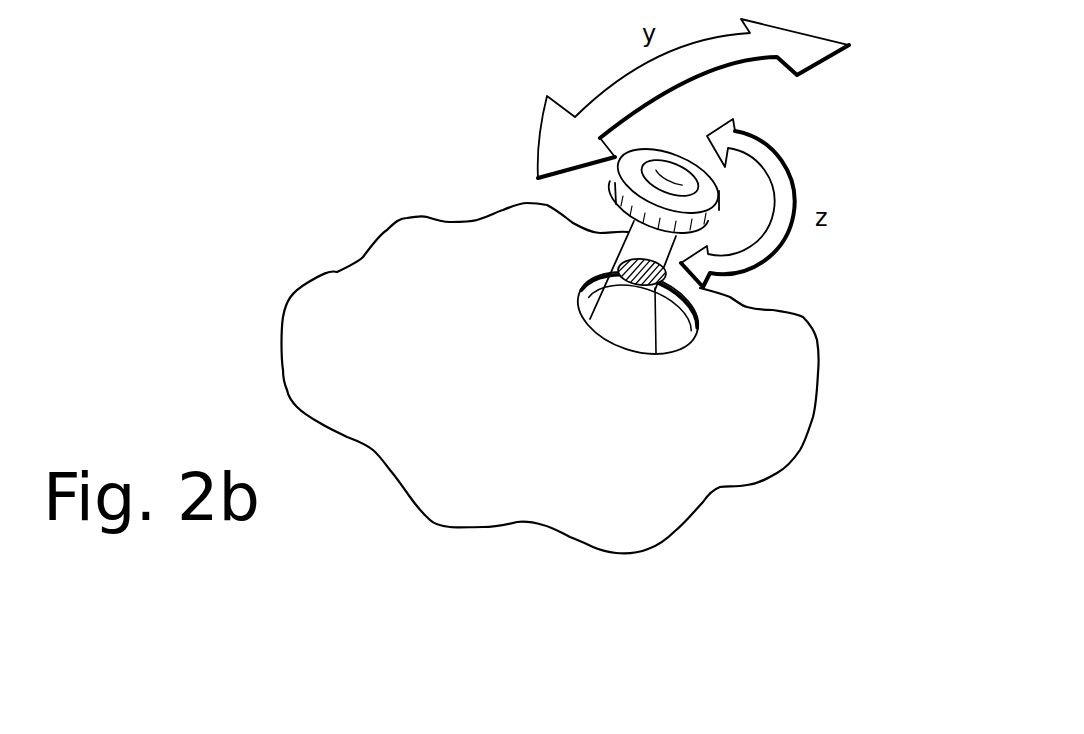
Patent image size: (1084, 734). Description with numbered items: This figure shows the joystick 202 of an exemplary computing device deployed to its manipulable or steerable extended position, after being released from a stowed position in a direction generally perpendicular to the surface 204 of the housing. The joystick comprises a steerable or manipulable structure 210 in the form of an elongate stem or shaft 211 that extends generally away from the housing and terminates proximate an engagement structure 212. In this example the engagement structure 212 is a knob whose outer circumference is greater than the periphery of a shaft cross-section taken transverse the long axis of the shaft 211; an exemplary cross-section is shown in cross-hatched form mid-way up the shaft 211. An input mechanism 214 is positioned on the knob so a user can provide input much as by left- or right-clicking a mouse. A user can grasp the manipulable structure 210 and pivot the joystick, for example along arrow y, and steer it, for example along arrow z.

The joystick 202 is at (596, 219).
The surface 204 is at (367, 354).
The manipulable structure 210 is at (583, 287).
The shaft 211 is at (651, 321).
The engagement structure 212 is at (601, 191).
The input mechanism 214 is at (729, 144).